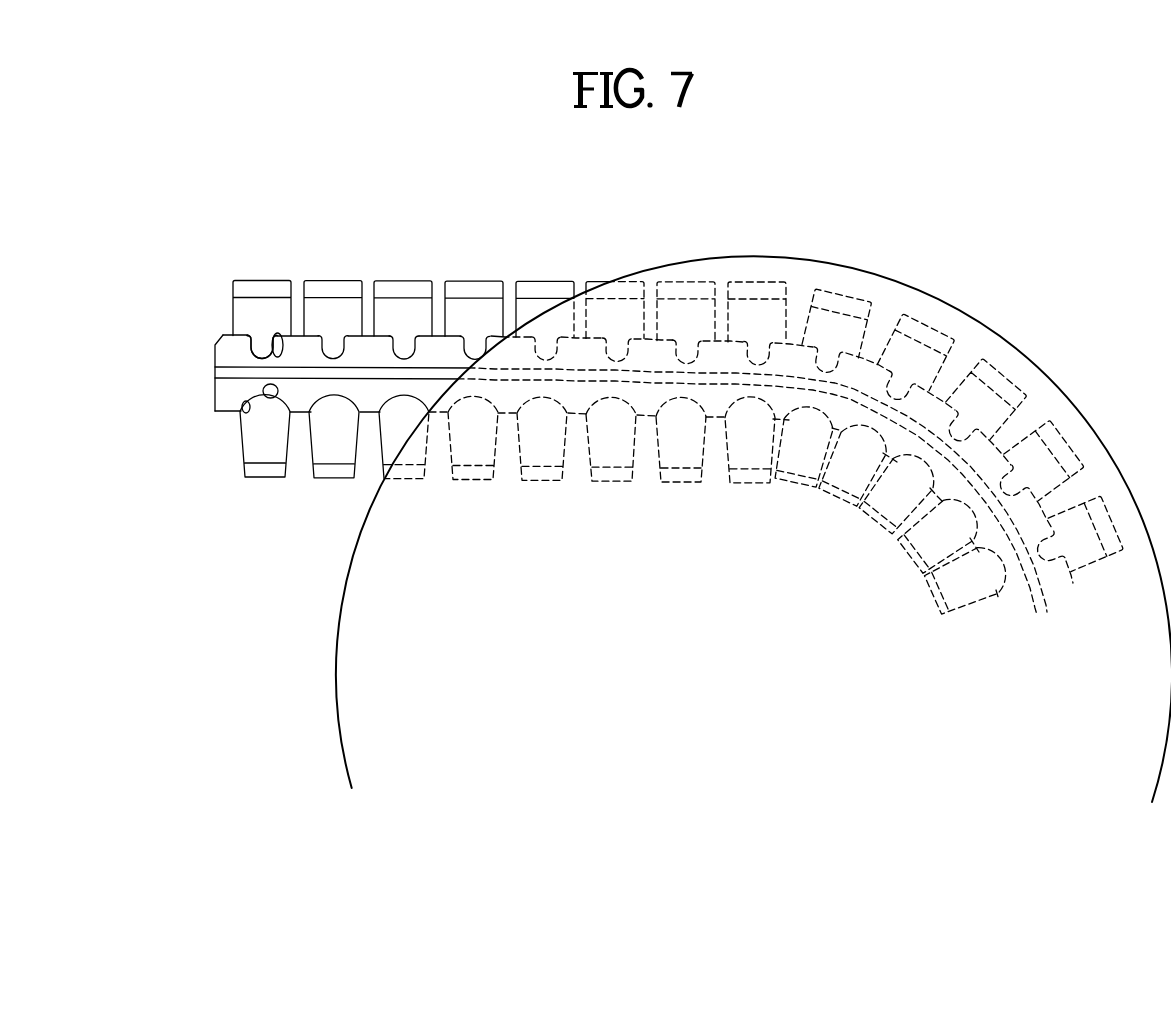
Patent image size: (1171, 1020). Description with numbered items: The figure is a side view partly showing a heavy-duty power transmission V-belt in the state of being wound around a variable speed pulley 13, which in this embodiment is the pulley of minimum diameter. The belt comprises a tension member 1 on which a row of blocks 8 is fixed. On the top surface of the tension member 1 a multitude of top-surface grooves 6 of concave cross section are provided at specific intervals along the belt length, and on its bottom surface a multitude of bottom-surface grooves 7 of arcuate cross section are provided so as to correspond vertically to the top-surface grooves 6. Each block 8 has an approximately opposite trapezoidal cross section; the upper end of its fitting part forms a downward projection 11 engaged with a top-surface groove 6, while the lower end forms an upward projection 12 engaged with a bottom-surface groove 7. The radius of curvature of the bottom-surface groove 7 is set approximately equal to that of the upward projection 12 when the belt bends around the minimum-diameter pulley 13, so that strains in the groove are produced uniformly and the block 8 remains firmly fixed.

The tension member 1 is at (214, 350).
The top-surface groove 6 is at (257, 345).
The bottom-surface groove 7 is at (252, 410).
The block 8 is at (262, 280).
The downward projection 11 is at (266, 352).
The upward projection 12 is at (279, 398).
The variable speed pulley 13 is at (1065, 397).